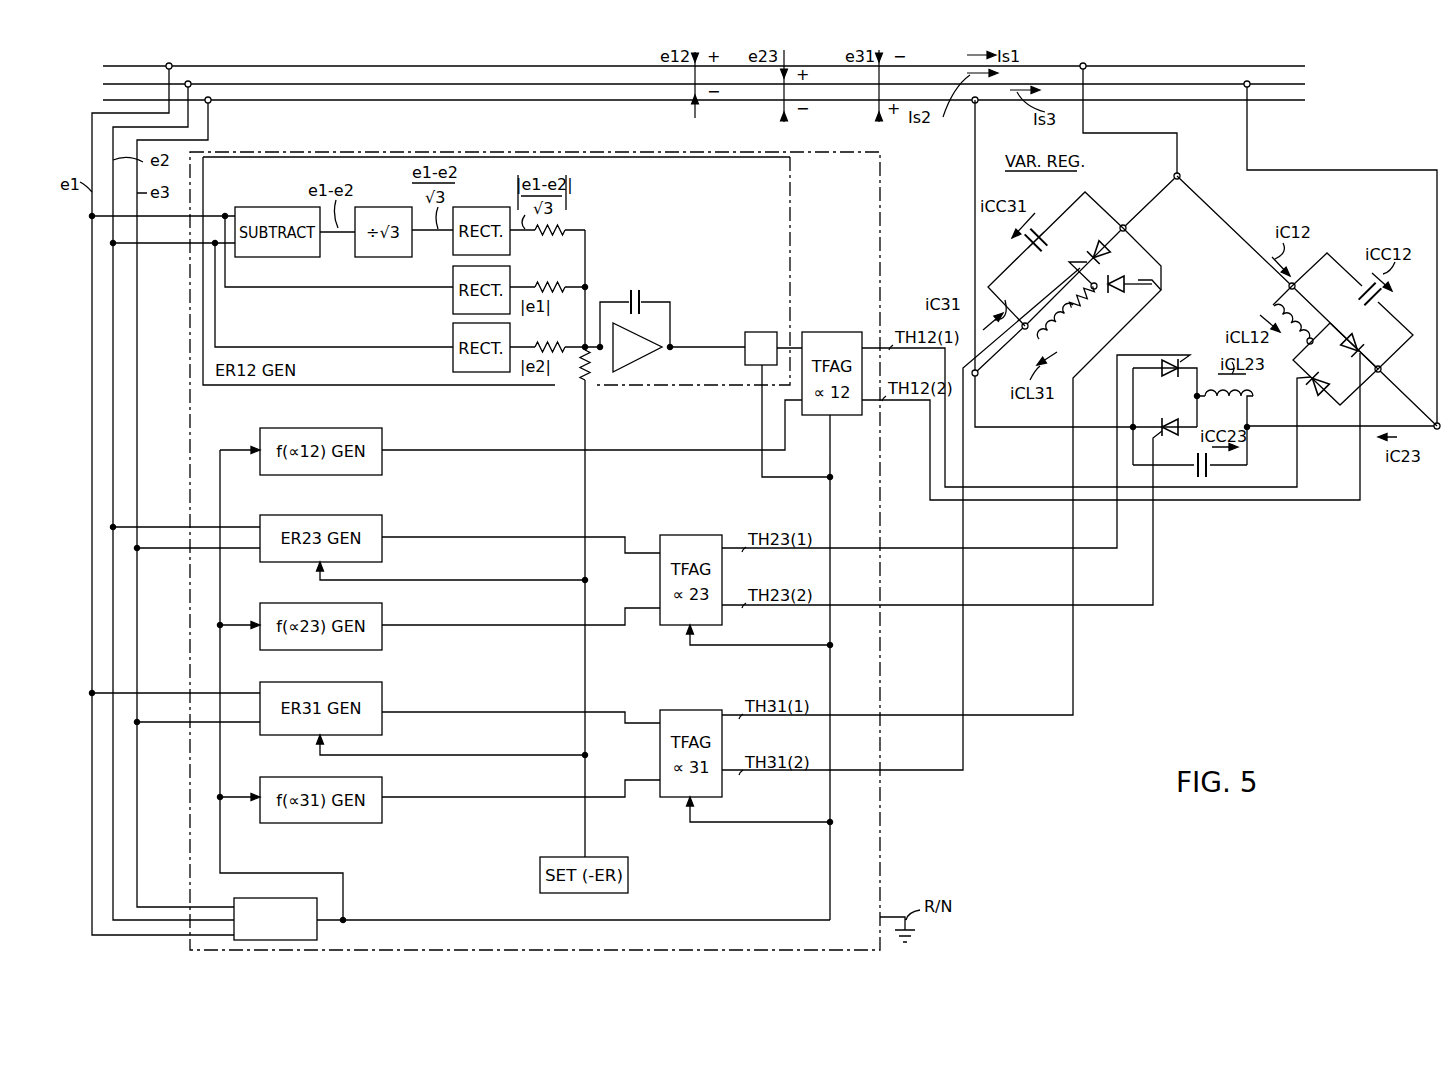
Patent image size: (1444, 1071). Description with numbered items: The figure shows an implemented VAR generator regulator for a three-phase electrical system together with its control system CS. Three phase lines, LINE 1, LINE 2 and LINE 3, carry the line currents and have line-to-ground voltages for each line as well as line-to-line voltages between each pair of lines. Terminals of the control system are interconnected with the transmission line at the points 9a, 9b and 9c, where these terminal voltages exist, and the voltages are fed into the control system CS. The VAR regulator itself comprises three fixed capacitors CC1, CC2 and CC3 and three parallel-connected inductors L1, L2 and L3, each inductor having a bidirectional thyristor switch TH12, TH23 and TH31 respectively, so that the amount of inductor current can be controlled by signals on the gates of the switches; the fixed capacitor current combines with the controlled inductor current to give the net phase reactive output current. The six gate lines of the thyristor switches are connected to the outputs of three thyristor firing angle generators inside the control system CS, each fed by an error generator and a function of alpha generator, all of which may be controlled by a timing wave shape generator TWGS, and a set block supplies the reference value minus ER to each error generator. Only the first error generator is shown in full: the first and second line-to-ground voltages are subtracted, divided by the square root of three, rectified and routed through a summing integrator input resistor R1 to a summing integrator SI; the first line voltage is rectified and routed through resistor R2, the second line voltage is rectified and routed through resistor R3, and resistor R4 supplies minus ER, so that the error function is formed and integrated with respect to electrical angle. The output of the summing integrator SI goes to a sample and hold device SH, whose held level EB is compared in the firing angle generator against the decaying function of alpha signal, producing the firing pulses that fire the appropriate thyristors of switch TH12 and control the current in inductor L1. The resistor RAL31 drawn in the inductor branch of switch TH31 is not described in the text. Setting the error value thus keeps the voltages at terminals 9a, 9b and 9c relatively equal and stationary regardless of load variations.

The terminal point 9a is at (169, 66).
The terminal point 9b is at (188, 84).
The terminal point 9c is at (208, 100).
The line 1 LINE1 is at (295, 74).
The line 2 LINE2 is at (440, 84).
The line 3 LINE3 is at (457, 100).
The summing integrator input resistor R1 is at (552, 236).
The resistor R2 is at (550, 286).
The resistor R3 is at (550, 344).
The resistor R4 is at (582, 382).
The summing integrator SI is at (672, 343).
The sample and hold device SH is at (787, 404).
The control system CS is at (880, 806).
The timing wave shape generator TWGS is at (532, 919).
The fixed capacitor CC1 is at (1352, 302).
The fixed capacitor CC2 is at (1202, 482).
The fixed capacitor CC3 is at (1056, 252).
The inductor L1 is at (1286, 314).
The inductor L2 is at (1240, 398).
The inductor L3 is at (1049, 333).
The bidirectional thyristor switch TH12 is at (1370, 338).
The bidirectional thyristor switch TH23 is at (1172, 352).
The bidirectional thyristor switch TH31 is at (1118, 275).
The resistor RAL31 is at (1092, 312).